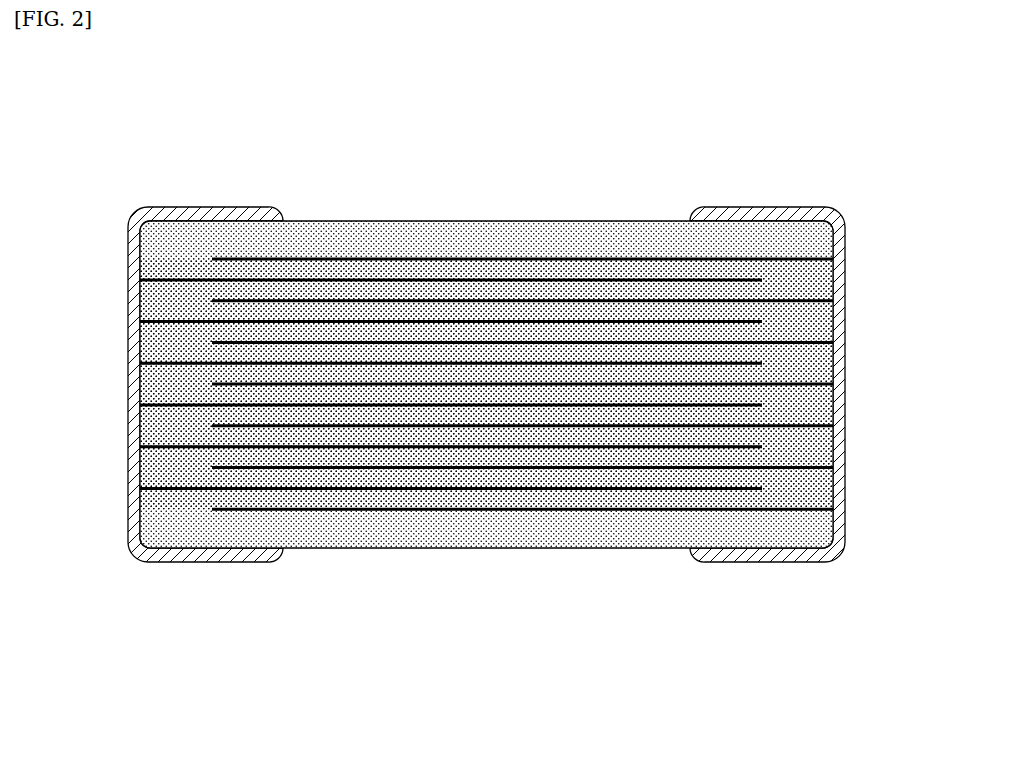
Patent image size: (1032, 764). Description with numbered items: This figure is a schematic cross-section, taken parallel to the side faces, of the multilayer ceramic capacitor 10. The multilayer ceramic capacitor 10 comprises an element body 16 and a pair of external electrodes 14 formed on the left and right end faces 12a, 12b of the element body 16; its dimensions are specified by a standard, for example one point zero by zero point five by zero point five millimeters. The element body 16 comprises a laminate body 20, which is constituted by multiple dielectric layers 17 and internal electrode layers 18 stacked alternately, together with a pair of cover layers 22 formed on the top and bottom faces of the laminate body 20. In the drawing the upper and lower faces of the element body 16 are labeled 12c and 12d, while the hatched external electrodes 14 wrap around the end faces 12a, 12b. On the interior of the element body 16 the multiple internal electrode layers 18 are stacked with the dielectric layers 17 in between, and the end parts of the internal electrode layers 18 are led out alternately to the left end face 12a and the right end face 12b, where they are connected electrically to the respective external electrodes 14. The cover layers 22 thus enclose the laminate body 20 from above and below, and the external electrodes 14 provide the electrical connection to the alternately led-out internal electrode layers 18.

The multilayer ceramic capacitor 10 is at (486, 353).
The end face 12a is at (138, 342).
The end face 12b is at (833, 330).
The first main surface 12c is at (408, 220).
The second main surface 12d is at (423, 550).
The external electrode 14 is at (127, 270).
The element body 16 is at (486, 344).
The dielectric layer 17 is at (433, 313).
The internal electrode layer 18 is at (507, 303).
The laminate body 20 is at (486, 311).
The cover layer 22 is at (440, 238).